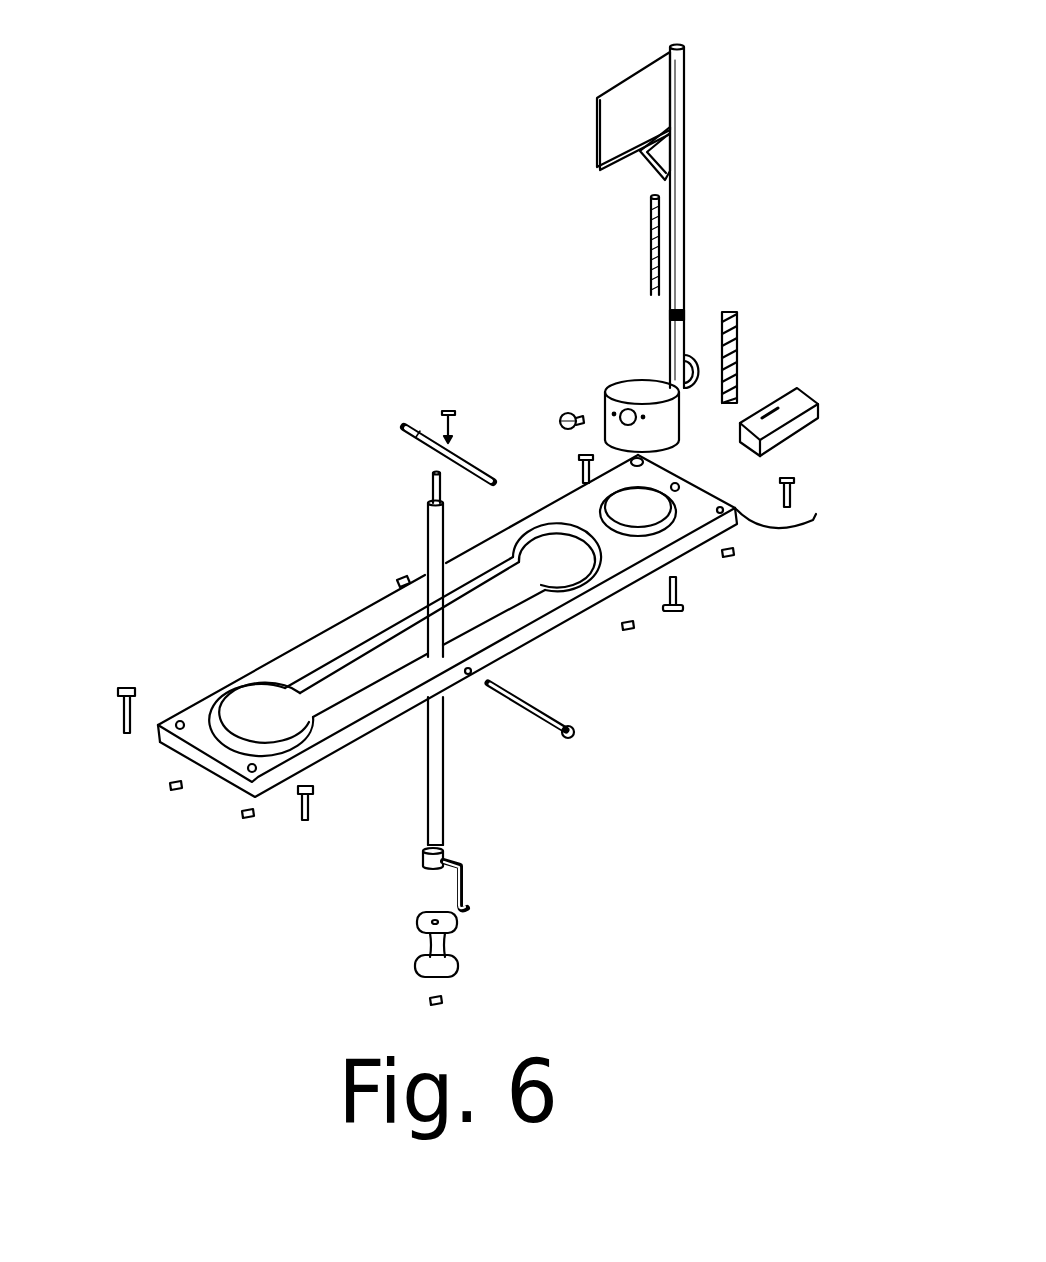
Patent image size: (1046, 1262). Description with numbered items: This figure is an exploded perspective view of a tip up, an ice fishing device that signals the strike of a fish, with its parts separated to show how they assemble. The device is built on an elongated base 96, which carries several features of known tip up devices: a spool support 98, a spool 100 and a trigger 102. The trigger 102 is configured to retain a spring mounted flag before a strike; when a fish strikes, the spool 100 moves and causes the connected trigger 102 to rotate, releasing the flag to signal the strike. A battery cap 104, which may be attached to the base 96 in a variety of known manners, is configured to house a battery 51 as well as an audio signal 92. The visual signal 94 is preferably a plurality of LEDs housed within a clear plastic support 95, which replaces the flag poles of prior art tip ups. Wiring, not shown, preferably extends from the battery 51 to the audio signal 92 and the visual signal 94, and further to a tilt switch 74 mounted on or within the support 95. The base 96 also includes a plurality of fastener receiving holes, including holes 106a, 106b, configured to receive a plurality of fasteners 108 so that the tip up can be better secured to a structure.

The battery 51 is at (800, 390).
The tilt switch 74 is at (686, 304).
The audio signal 92 is at (565, 413).
The visual signal 94 is at (648, 248).
The clear plastic support 95 is at (707, 228).
The base 96 is at (545, 645).
The spool support 98 is at (447, 768).
The spool 100 is at (457, 960).
The trigger 102 is at (462, 455).
The battery cap 104 is at (607, 387).
The fastener receiving hole 106a is at (178, 721).
The fastener receiving hole 106b is at (254, 772).
The fasteners 108 is at (120, 713).